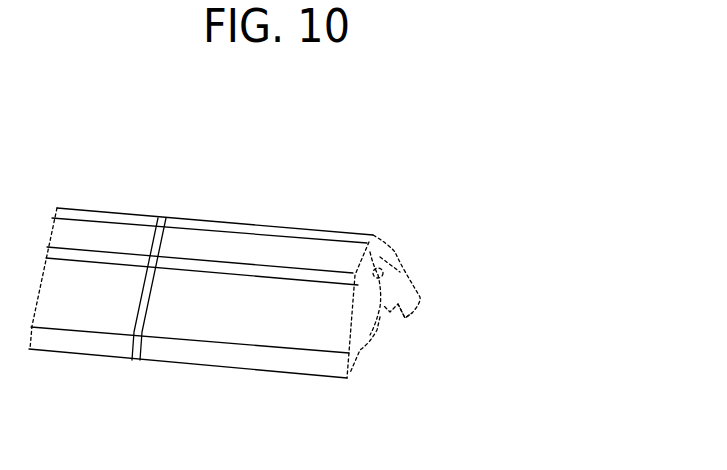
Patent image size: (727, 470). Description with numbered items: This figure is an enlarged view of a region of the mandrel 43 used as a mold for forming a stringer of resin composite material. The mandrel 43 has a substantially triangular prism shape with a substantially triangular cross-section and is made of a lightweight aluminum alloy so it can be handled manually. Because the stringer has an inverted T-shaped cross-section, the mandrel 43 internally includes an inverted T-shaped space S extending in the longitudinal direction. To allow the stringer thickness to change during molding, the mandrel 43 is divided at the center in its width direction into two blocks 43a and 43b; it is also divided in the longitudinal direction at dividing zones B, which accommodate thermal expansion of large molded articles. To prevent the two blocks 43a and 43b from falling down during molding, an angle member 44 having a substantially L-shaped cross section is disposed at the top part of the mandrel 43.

The mandrel 43 is at (430, 248).
The block 43a is at (308, 323).
The block 43b is at (400, 265).
The angle member 44 is at (201, 299).
The dividing zone B is at (135, 371).
The inverted T-shaped space S is at (393, 323).